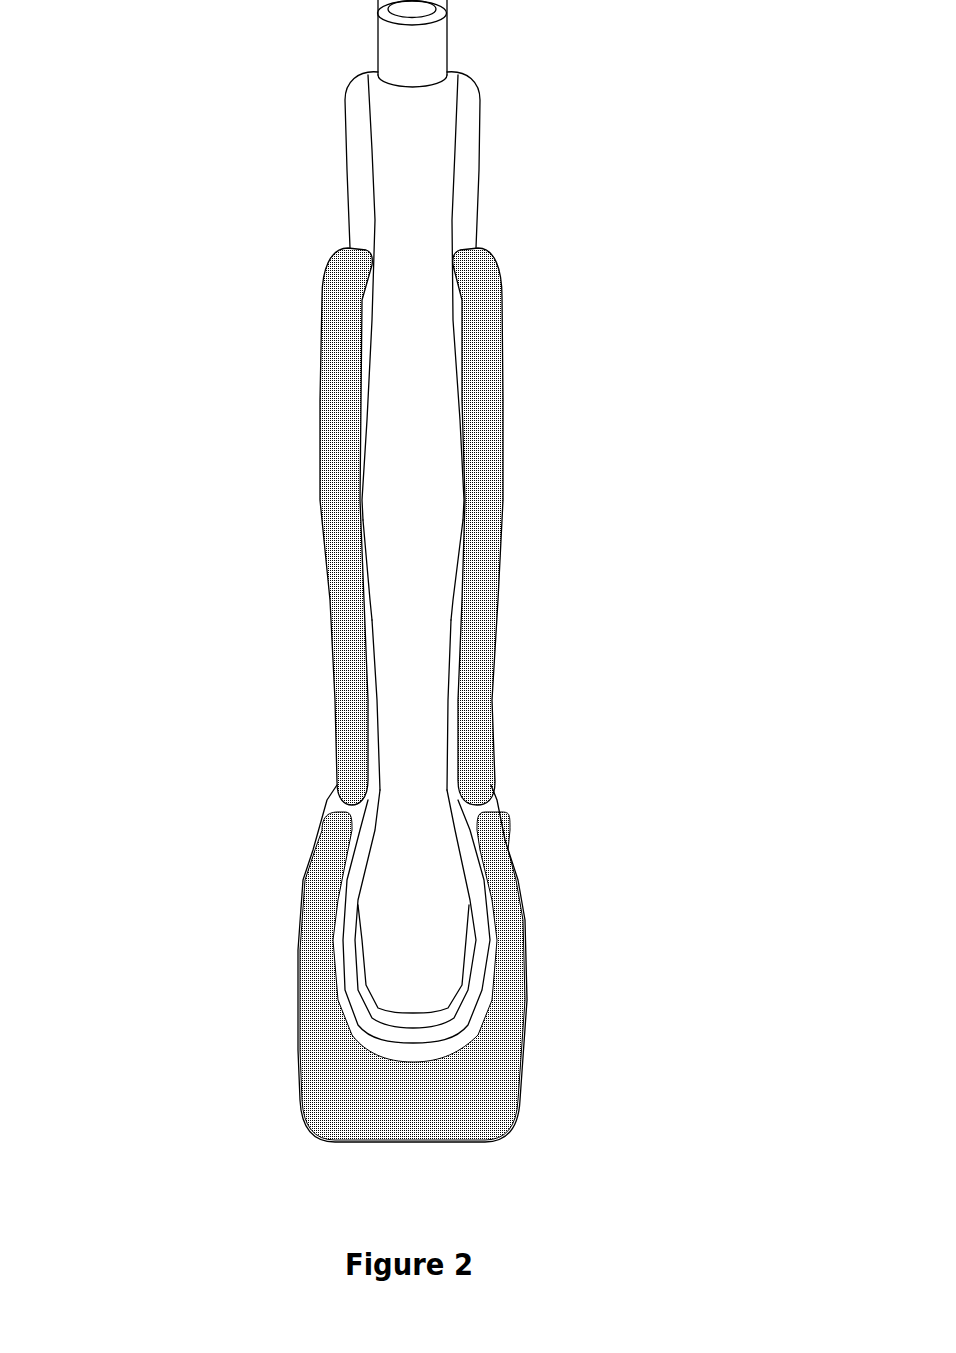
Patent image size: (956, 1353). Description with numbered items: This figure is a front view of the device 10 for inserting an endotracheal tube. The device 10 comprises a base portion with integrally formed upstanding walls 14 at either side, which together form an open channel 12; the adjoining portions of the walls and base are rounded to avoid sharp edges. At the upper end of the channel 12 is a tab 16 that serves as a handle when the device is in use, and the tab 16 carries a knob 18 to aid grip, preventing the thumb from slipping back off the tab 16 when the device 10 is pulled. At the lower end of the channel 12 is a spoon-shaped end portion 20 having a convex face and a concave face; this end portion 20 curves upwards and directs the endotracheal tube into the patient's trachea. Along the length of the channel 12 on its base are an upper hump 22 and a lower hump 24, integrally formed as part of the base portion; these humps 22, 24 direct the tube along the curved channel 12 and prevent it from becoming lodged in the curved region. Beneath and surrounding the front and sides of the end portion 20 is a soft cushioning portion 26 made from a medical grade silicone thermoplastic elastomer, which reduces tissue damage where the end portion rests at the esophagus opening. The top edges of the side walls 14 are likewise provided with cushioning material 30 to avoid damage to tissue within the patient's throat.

The device 10 is at (210, 1110).
The open channel 12 is at (404, 476).
The upstanding walls 14 is at (452, 643).
The tab 16 is at (480, 117).
The knob 18 is at (411, 44).
The spoon-shaped end portion 20 is at (424, 983).
The upper hump 22 is at (408, 568).
The lower hump 24 is at (413, 765).
The soft cushioning portion 26 is at (468, 1117).
The cushioning material 30 is at (347, 785).